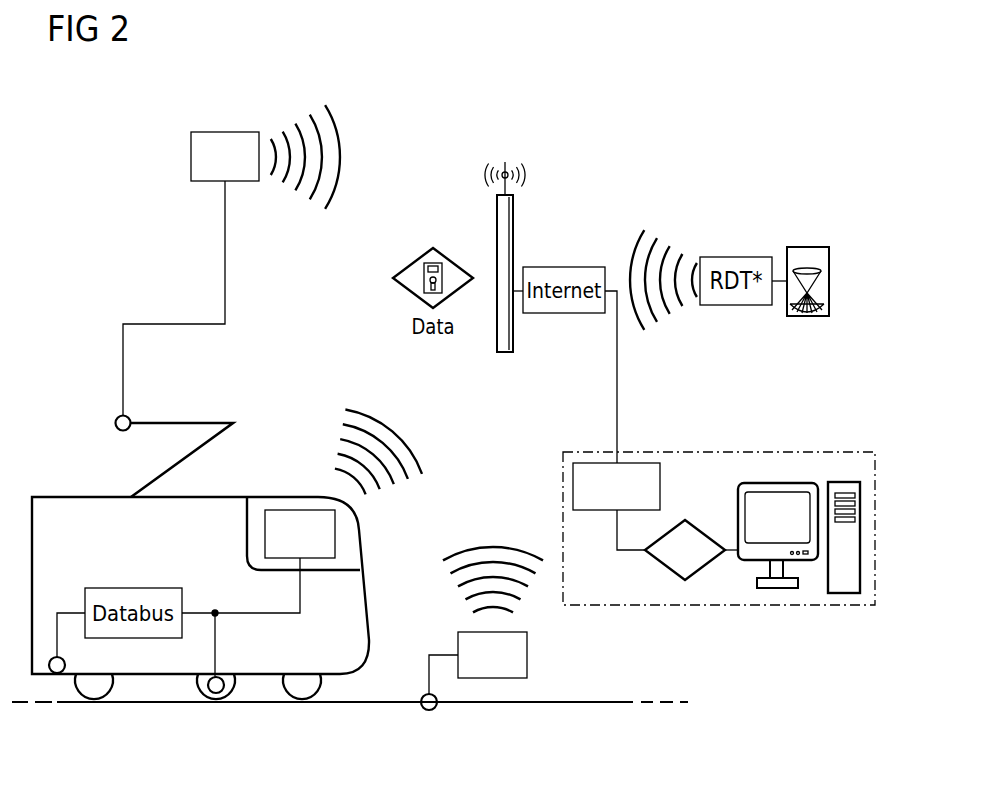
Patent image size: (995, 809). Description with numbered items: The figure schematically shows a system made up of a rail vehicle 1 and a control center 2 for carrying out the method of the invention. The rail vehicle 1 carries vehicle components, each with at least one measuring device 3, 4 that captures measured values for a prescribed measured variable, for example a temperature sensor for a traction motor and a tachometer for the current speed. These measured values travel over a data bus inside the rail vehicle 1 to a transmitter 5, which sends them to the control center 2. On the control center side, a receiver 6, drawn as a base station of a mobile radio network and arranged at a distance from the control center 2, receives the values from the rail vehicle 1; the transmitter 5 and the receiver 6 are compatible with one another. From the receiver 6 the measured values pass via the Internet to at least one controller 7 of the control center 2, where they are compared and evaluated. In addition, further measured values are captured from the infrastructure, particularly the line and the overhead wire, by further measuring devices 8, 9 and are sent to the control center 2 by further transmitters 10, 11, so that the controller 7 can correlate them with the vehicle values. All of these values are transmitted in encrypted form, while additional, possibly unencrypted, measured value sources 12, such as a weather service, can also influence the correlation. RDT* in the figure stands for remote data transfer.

The rail vehicle 1 is at (367, 592).
The control center 2 is at (813, 452).
The measuring device 3 is at (57, 674).
The measuring device 4 is at (216, 694).
The transmitter 5 is at (295, 510).
The receiver 6 is at (505, 162).
The controller 7 is at (845, 594).
The further measuring device 8 is at (429, 711).
The further measuring device 9 is at (115, 423).
The further transmitter 10 is at (527, 655).
The further transmitter 11 is at (225, 130).
The additional measured value source 12 is at (806, 247).